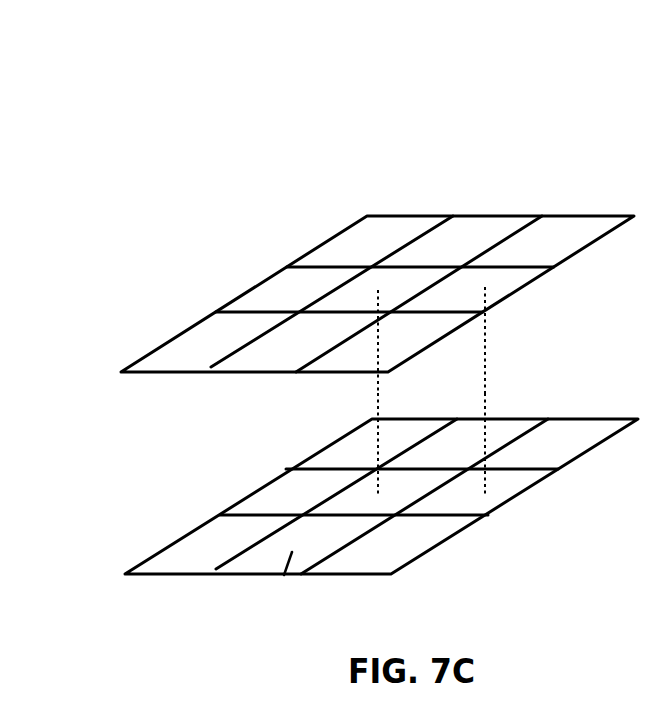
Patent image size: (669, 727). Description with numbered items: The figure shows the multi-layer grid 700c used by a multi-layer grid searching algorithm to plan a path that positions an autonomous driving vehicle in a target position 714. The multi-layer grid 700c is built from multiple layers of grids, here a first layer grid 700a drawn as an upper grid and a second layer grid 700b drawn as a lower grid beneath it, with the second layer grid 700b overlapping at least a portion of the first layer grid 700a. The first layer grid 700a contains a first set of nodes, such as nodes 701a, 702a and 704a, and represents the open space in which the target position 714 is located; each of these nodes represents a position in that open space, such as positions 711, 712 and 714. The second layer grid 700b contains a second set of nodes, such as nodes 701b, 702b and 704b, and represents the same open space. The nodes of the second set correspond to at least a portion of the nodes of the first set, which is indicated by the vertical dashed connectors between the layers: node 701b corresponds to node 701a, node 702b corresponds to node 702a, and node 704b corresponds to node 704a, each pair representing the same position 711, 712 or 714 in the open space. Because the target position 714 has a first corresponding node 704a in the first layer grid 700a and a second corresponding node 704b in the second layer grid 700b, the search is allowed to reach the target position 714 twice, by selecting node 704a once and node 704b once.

The multi-layer grid 700c is at (381, 217).
The first layer grid 700a is at (428, 205).
The second layer grid 700b is at (498, 406).
The node 701a is at (485, 287).
The node 701b is at (485, 496).
The node 702a is at (378, 290).
The node 702b is at (380, 497).
The node 704a is at (258, 357).
The node 704b is at (293, 552).
The position 711 is at (470, 496).
The position 712 is at (360, 497).
The target position 714 is at (292, 552).